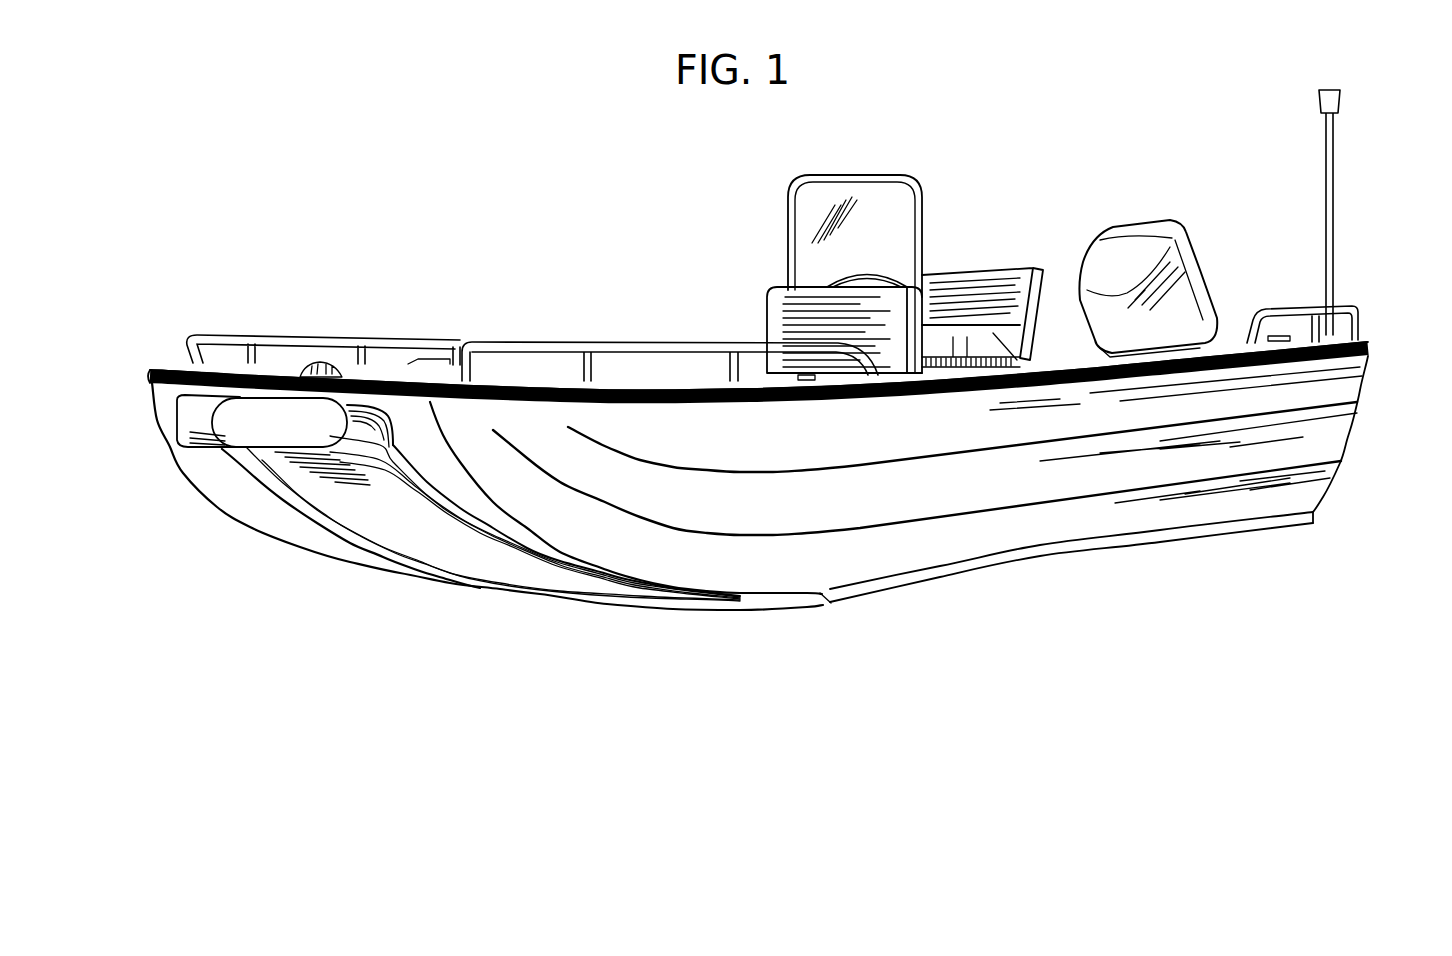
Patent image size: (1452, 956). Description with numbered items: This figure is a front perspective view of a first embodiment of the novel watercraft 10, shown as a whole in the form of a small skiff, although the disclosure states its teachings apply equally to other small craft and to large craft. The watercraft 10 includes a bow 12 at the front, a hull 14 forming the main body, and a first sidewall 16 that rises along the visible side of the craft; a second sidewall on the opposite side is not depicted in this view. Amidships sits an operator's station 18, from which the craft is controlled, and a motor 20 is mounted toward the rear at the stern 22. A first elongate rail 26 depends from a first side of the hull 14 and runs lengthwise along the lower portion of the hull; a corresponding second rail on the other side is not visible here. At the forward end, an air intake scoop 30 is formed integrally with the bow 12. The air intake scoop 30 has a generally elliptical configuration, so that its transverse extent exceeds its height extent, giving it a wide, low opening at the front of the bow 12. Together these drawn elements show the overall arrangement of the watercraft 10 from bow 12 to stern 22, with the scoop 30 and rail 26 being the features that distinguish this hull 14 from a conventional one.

The watercraft 10 is at (424, 160).
The bow 12 is at (178, 469).
The hull 14 is at (630, 612).
The first sidewall 16 is at (1014, 500).
The operator's station 18 is at (776, 227).
The motor 20 is at (1113, 222).
The stern 22 is at (1343, 429).
The first elongate rail 26 is at (1078, 558).
The air intake scoop 30 is at (172, 405).